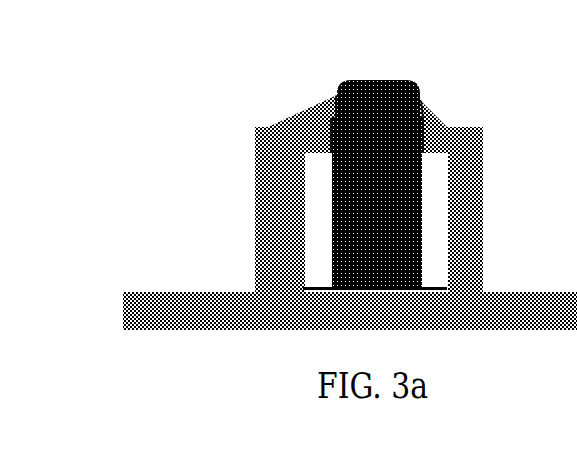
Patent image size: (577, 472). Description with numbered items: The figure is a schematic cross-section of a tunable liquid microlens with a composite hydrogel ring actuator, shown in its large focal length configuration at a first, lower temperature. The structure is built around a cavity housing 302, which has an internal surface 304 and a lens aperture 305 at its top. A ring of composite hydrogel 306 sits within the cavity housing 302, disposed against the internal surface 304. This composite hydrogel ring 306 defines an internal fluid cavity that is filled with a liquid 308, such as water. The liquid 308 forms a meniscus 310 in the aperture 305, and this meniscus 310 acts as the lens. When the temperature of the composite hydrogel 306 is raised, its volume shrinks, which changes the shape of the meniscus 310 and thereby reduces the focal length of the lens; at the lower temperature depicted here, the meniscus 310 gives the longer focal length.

The cavity housing 302 is at (443, 130).
The internal surface 304 is at (305, 237).
The lens aperture 305 is at (335, 120).
The composite hydrogel ring 306 is at (445, 190).
The liquid 308 is at (357, 198).
The meniscus 310 is at (390, 80).